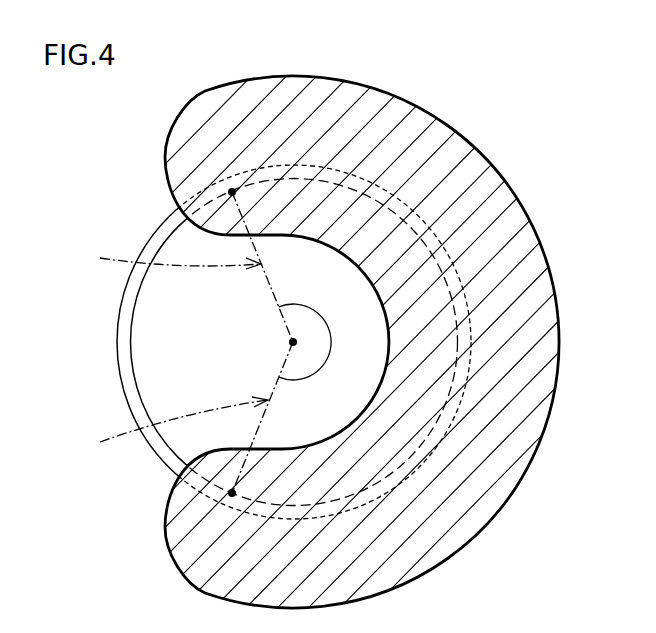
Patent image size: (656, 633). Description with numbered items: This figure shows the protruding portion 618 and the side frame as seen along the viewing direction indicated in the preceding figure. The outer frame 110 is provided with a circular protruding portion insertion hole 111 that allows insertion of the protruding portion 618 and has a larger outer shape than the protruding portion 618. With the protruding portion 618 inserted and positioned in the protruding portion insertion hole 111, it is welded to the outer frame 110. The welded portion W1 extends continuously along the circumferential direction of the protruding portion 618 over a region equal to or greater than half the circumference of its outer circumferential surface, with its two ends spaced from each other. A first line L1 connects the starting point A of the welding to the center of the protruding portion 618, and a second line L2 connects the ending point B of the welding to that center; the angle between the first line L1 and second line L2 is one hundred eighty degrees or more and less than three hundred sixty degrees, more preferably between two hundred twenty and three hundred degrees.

The welded portion W1 is at (460, 148).
The protruding portion insertion hole 111 is at (135, 407).
The protruding portion 618 is at (150, 344).
The outer frame 110 is at (599, 511).
The starting point A is at (232, 192).
The ending point B is at (232, 493).
The first line L1 is at (166, 261).
The second line L2 is at (170, 424).